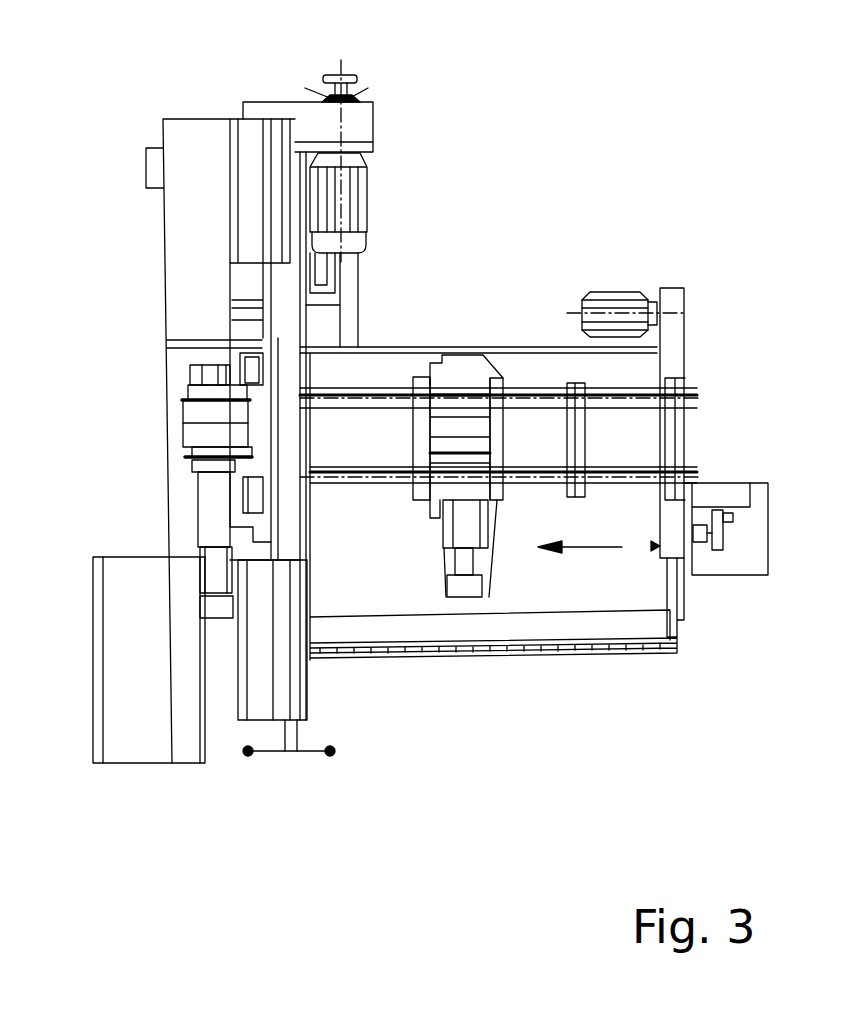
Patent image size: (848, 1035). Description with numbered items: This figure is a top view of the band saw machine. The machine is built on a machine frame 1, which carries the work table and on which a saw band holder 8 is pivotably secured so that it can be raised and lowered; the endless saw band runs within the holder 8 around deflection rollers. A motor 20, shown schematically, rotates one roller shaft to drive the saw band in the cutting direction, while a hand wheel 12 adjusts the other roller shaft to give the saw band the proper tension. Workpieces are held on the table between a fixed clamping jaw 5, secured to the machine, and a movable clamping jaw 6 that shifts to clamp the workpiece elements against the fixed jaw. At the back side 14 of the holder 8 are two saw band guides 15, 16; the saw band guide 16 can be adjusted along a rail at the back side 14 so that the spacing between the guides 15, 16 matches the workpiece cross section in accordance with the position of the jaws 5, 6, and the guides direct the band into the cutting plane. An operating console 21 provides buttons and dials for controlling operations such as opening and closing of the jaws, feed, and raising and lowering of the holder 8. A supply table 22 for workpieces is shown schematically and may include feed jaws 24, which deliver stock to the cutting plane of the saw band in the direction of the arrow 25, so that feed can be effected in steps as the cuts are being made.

The machine frame 1 is at (207, 173).
The motor 20 is at (357, 195).
The back side 14 is at (282, 357).
The feed jaws 24 is at (460, 367).
The saw band guide 15 is at (227, 363).
The clamping jaw 5 is at (213, 373).
The clamping jaw 6 is at (197, 467).
The saw band guide 16 is at (233, 483).
The operating console 21 is at (153, 713).
The saw band holder 8 is at (278, 683).
The hand wheel 12 is at (278, 753).
The arrow 25 is at (585, 548).
The supply table 22 is at (620, 572).